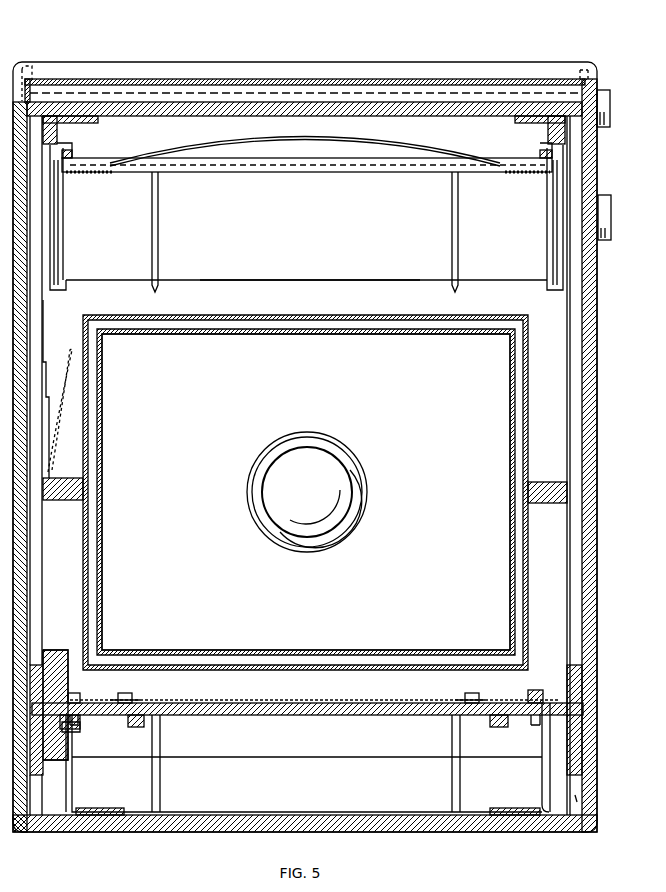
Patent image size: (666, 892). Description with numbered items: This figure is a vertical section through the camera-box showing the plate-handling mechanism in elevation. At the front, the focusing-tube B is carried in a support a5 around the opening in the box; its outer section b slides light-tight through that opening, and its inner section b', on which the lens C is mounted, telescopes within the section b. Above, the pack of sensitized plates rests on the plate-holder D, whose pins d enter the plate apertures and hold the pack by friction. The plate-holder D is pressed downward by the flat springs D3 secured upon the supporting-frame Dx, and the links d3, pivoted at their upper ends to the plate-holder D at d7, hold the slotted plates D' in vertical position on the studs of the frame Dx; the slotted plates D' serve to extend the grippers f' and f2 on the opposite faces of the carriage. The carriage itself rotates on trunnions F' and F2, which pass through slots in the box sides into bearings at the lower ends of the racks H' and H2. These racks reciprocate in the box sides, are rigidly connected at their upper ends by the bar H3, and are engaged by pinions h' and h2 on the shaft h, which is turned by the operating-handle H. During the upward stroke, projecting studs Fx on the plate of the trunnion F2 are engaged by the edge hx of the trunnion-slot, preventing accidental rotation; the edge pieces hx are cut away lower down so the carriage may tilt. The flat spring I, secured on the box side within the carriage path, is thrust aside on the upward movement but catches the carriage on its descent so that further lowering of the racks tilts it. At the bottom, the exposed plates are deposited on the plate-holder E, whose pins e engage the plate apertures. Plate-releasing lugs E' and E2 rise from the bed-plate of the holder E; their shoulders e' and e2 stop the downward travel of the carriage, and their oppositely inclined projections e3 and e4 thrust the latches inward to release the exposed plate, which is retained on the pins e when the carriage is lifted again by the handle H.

The rack H' is at (323, 447).
The rack H2 is at (578, 408).
The shaft h is at (305, 76).
The pinion h2 is at (30, 68).
The pinion h' is at (585, 59).
The bar H3 is at (300, 80).
The operating-handle H is at (621, 217).
The edge of trunnion-slot hx is at (46, 310).
The flat spring I is at (62, 432).
The plate-holder D is at (307, 177).
The flat springs D3 is at (322, 128).
The supporting-frame Dx is at (60, 152).
The pivot d7 is at (82, 173).
The slotted plate D' is at (306, 217).
The link d3 is at (60, 220).
The pin d is at (152, 245).
The support for focusing-tube a5 is at (312, 281).
The focusing-tube section b is at (305, 482).
The focusing-tube section b' is at (306, 492).
The focusing-tube B is at (306, 492).
The lens C is at (307, 492).
The trunnion F' is at (330, 706).
The projecting studs Fx is at (55, 652).
The trunnion F2 is at (76, 730).
The inclined projection e4 is at (74, 695).
The shoulder e2 is at (80, 724).
The grippers f' is at (297, 688).
The grippers f2 is at (136, 728).
The inclined projection e3 is at (540, 690).
The pin e is at (306, 763).
The shoulder e' is at (534, 757).
The plate-holder E is at (304, 763).
The plate-releasing lug E' is at (517, 793).
The plate-releasing lug E2 is at (70, 792).